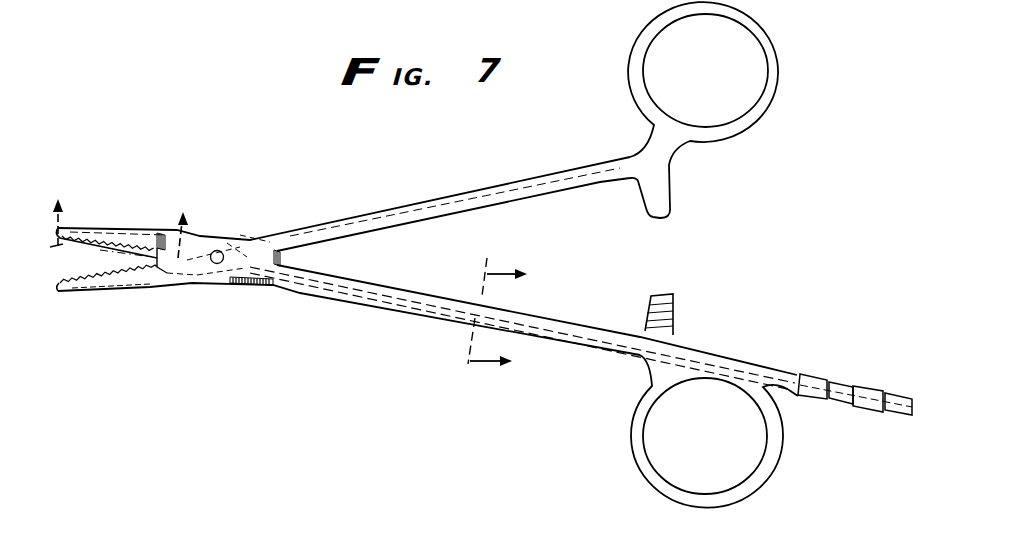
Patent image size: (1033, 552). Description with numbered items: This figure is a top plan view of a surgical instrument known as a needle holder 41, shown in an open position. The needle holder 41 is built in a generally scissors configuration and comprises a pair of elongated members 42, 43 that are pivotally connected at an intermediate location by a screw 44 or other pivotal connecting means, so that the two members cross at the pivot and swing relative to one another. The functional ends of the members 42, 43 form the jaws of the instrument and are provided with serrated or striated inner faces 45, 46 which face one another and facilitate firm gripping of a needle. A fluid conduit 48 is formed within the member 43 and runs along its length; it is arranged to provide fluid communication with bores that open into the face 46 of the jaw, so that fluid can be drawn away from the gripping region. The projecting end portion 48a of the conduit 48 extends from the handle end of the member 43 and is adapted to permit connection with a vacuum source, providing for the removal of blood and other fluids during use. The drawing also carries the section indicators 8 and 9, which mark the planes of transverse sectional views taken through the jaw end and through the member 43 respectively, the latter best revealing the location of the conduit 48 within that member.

The section line 8- 8 is at (122, 213).
The section line 9- 9 is at (510, 320).
The needle holder 41 is at (344, 340).
The elongated member 42 is at (430, 202).
The elongated member 43 is at (437, 316).
The screw 44 is at (214, 264).
The serrated inner face 45 is at (107, 273).
The serrated inner face 46 is at (115, 238).
The fluid conduit 48 is at (131, 235).
The projecting end portion 48a is at (840, 383).